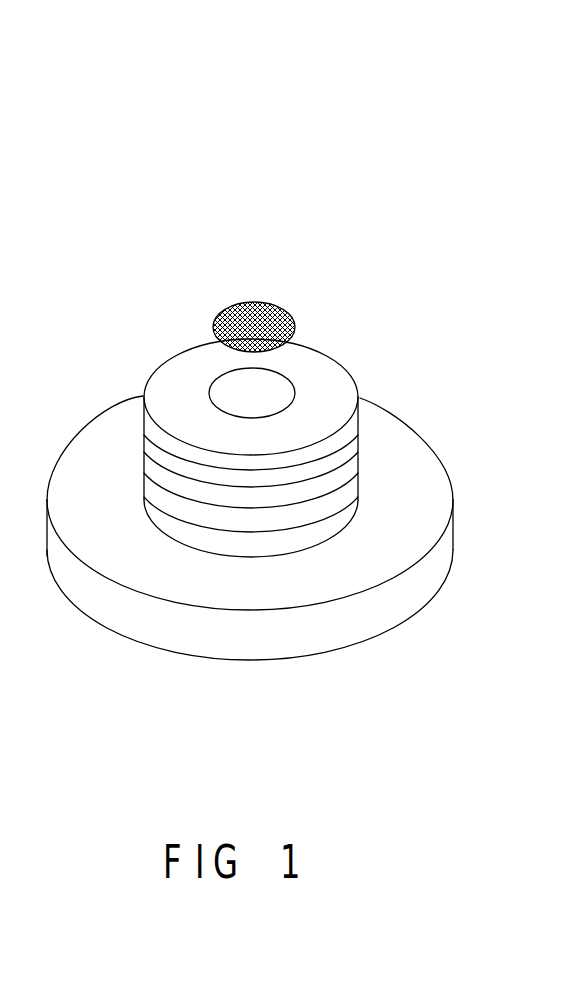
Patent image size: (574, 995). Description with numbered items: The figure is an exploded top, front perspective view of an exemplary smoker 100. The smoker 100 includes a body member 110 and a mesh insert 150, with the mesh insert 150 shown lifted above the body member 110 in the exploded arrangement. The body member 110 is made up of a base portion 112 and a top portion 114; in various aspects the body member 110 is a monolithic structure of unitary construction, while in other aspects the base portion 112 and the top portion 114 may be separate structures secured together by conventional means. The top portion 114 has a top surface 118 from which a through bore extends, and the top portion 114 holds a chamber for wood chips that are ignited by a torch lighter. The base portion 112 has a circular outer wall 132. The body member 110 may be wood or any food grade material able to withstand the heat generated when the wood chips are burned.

The smoker 100 is at (455, 170).
The body member 110 is at (430, 440).
The base portion 112 is at (453, 533).
The top portion 114 is at (360, 397).
The top surface 118 is at (167, 384).
The outer wall 132 is at (98, 598).
The mesh insert 150 is at (295, 322).